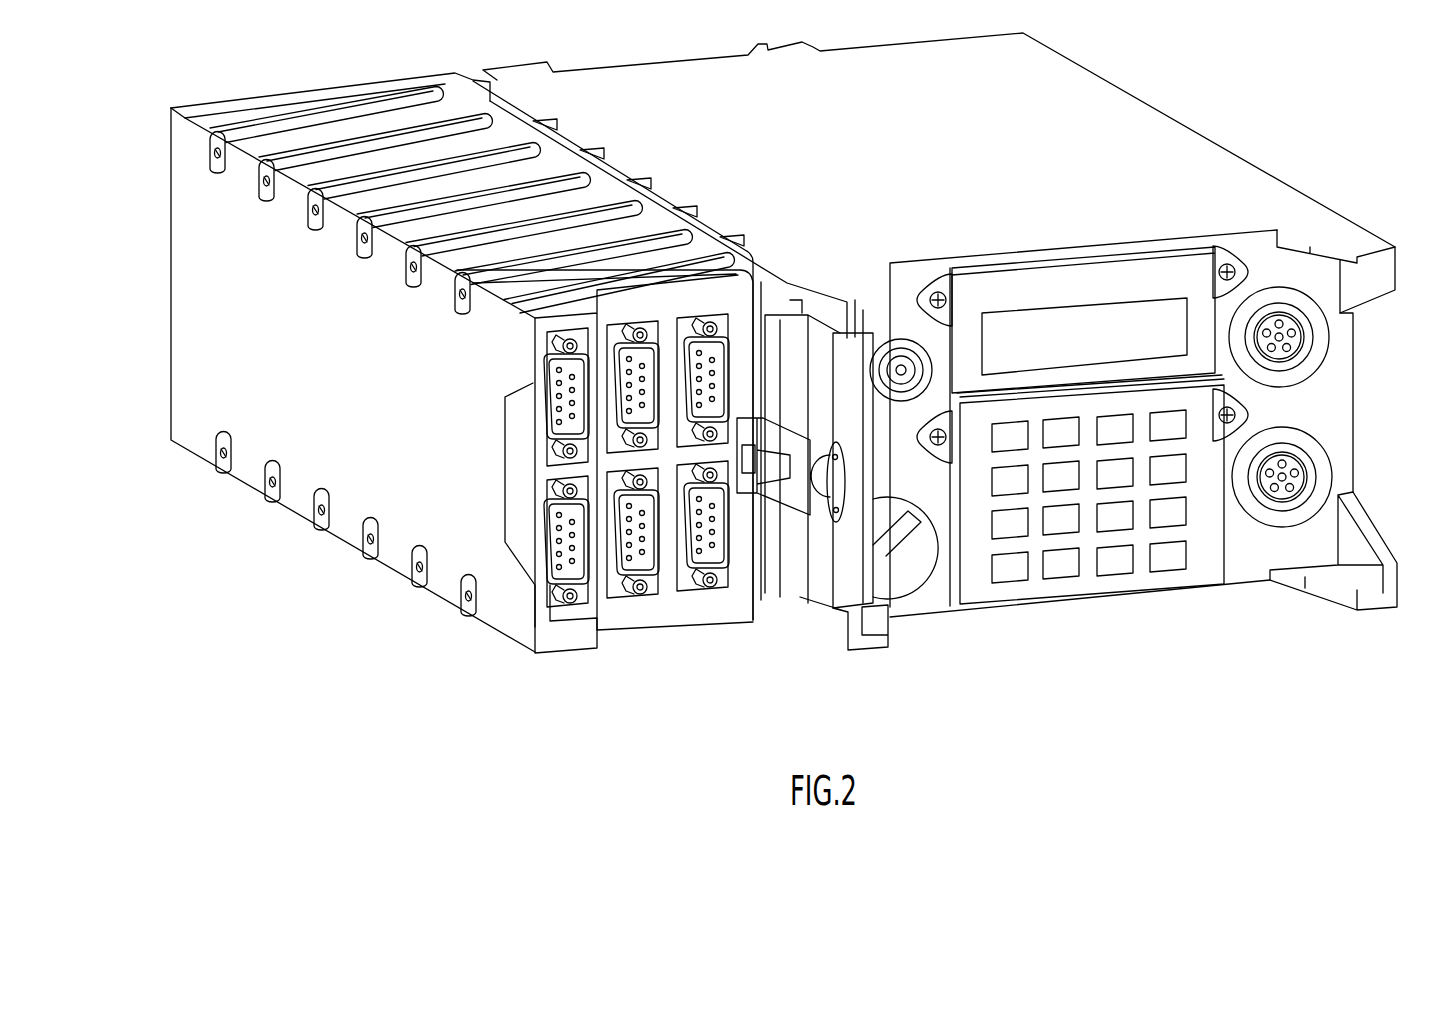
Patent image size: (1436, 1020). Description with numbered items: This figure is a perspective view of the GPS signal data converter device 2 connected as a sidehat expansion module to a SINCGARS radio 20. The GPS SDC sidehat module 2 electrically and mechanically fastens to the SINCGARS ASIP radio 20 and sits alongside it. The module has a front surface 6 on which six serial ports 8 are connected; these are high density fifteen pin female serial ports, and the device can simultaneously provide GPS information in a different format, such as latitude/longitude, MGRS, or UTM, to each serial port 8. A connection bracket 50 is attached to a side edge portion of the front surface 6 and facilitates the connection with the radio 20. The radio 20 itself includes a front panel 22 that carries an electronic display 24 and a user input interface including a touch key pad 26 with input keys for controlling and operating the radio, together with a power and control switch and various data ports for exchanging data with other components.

The GPS SDC device 2 is at (337, 447).
The front surface 6 is at (692, 615).
The serial ports 8 is at (613, 585).
The SINCGARS radio 20 is at (1190, 167).
The front panel 22 is at (1327, 392).
The electronic display 24 is at (1165, 322).
The touch key pad 26 is at (1197, 560).
The connection bracket 50 is at (847, 587).